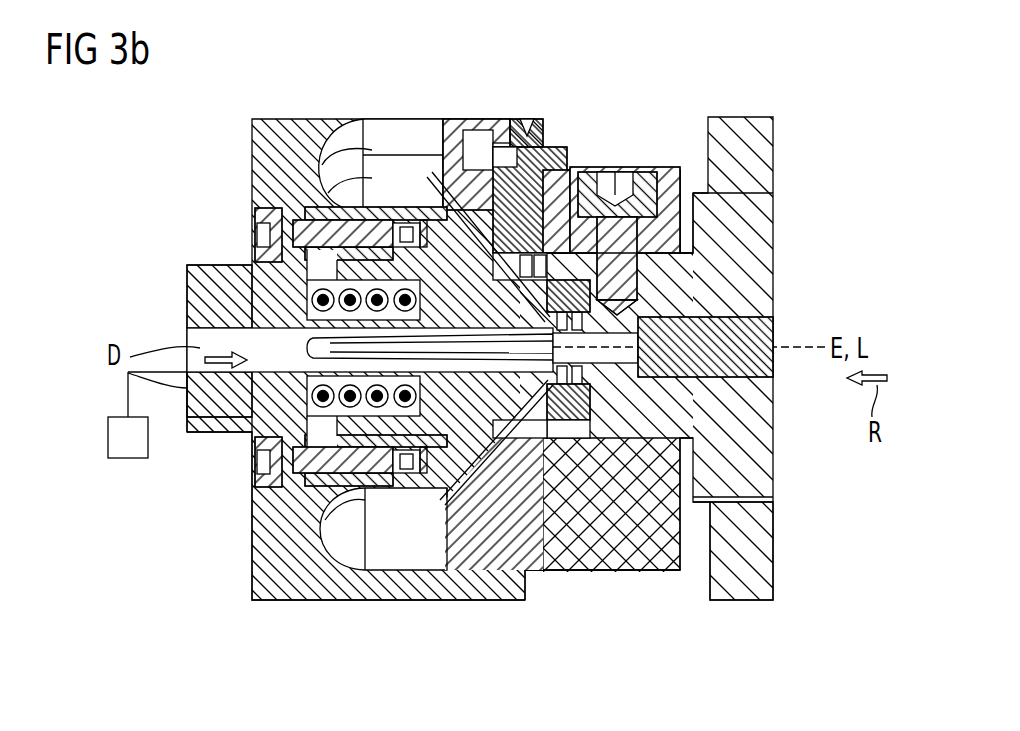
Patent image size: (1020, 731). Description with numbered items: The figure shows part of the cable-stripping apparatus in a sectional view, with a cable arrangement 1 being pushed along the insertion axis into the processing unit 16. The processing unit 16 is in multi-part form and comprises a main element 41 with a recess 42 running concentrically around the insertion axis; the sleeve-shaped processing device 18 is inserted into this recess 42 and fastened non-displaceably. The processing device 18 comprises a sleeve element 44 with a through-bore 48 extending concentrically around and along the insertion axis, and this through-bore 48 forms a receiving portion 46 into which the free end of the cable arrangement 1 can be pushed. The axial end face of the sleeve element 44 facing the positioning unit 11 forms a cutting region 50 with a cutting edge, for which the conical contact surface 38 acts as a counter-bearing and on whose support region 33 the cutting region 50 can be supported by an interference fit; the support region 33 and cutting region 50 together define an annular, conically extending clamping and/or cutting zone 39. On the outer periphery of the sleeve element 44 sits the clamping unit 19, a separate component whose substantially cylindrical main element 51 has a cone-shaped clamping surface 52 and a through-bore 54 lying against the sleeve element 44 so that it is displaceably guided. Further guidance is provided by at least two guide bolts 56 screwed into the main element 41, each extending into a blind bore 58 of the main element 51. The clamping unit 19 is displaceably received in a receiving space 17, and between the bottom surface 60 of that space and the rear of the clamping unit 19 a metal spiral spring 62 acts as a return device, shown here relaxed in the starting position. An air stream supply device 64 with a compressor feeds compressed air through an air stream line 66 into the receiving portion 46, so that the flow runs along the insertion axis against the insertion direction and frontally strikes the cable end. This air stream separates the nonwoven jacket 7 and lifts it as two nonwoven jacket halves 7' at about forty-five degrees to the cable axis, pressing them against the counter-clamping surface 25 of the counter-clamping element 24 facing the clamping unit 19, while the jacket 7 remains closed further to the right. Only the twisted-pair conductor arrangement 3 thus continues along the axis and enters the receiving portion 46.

The cable arrangement 1 is at (788, 318).
The electrical conductor arrangement 3 is at (372, 150).
The nonwoven jacket 7 is at (689, 377).
The nonwoven jacket halves 7' is at (485, 362).
The positioning unit 11 is at (686, 138).
The processing unit 16 is at (215, 133).
The receiving space 17 is at (305, 548).
The processing device 18 is at (187, 432).
The clamping unit 19 is at (433, 480).
The counter-clamping element 24 is at (502, 122).
The counter-clamping surface 25 is at (449, 130).
The support region 33 is at (713, 505).
The contact surface 38 is at (600, 420).
The clamping and/or cutting zone 39 is at (560, 470).
The main element 41 is at (292, 119).
The recess 42 is at (227, 433).
The sleeve element 44 is at (187, 295).
The receiving portion 46 is at (128, 378).
The through-bore 48 is at (170, 332).
The cutting region 50 is at (527, 587).
The main element 51 is at (323, 478).
The clamping surface 52 is at (448, 513).
The through-bore 54 is at (497, 537).
The guide bolts 56 is at (257, 209).
The blind bore 58 is at (387, 205).
The bottom surface 60 is at (275, 518).
The spiral spring 62 is at (257, 263).
The air stream supply device 64 is at (110, 440).
The air stream line 66 is at (128, 393).